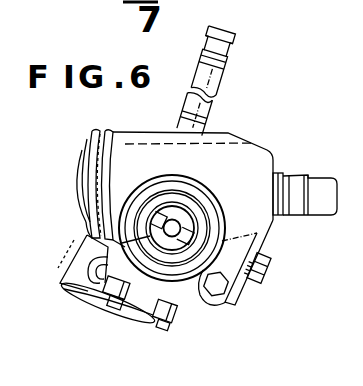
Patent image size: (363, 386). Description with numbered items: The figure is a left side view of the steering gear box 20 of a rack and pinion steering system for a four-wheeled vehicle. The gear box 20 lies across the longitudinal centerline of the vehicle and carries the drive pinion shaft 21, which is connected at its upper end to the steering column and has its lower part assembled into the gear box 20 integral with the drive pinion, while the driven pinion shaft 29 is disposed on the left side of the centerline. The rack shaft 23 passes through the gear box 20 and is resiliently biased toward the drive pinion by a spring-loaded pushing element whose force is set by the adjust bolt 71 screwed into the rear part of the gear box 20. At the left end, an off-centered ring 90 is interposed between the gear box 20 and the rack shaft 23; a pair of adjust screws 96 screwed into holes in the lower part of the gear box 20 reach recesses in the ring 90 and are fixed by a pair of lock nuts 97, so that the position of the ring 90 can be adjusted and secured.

The steering gear box 20 is at (246, 131).
The drive pinion shaft 21 is at (221, 83).
The rack shaft 23 is at (82, 238).
The driven pinion shaft 29 is at (311, 206).
The adjust bolt 71 is at (263, 272).
The off-centered ring 90 is at (177, 256).
The adjust screws 96 is at (115, 308).
The lock nuts 97 is at (87, 292).